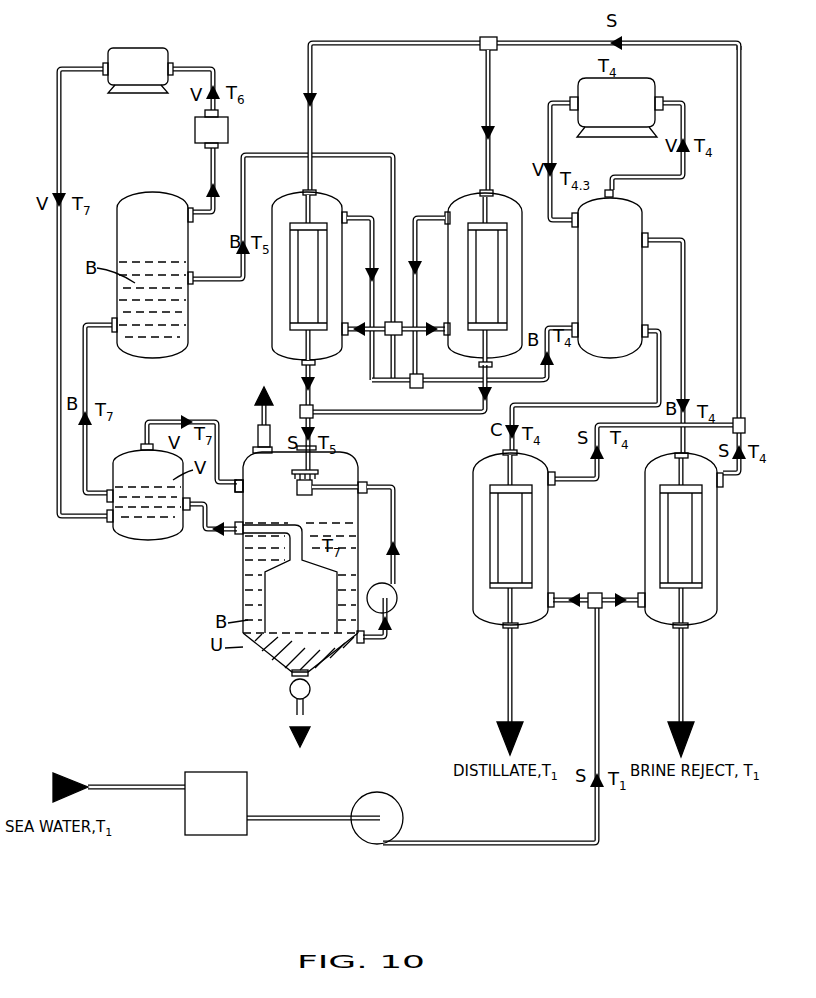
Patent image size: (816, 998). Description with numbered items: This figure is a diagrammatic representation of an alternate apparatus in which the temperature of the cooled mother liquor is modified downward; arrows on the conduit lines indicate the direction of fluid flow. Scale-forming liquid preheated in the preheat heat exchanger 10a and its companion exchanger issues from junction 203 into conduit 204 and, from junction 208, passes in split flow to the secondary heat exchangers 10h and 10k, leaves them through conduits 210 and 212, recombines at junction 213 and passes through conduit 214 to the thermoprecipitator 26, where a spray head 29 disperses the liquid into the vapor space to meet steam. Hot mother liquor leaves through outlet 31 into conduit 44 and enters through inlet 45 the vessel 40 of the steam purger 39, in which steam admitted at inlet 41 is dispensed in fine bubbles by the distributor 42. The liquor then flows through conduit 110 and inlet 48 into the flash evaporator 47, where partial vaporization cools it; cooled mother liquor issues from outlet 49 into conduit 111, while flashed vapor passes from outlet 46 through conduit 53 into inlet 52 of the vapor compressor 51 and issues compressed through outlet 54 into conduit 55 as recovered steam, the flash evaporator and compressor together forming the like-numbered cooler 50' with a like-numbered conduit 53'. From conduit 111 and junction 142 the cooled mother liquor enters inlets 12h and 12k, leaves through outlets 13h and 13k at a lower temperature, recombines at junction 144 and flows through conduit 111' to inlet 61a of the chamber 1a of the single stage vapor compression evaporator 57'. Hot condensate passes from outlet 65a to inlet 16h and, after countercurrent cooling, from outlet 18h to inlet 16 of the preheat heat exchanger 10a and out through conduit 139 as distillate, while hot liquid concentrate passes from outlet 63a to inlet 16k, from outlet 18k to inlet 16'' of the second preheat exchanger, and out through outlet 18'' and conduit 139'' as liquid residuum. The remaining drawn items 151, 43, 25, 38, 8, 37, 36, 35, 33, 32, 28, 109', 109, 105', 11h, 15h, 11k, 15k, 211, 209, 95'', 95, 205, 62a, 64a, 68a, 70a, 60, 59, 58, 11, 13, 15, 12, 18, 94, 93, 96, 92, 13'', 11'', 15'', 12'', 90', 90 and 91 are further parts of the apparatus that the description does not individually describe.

The vapor compressor 51 is at (123, 48).
The outlet 54 is at (102, 64).
The inlet 52 is at (173, 62).
The compressor assembly 50' is at (218, 40).
The compressor discharge line 53' is at (215, 84).
The trap 151 is at (229, 124).
The conduit 53 is at (196, 180).
The outlet 46 is at (193, 222).
The conduit 55 is at (62, 123).
The flash evaporator 47 is at (143, 191).
The inlet 48 is at (113, 318).
The outlet 49 is at (193, 284).
The conduit 111 is at (293, 267).
The conduit 110 is at (88, 376).
The vapor line 43 is at (210, 422).
The vapor outlet nozzle 25 is at (141, 445).
The steam purger 39 is at (131, 457).
The vessel 40 is at (136, 495).
The distributor 42 is at (148, 520).
The inlet nozzle 38 is at (106, 497).
The inlet 41 is at (109, 524).
The inlet 45 is at (189, 511).
The conduit 44 is at (210, 533).
The outlet 31 is at (237, 488).
The evaporator vessel 8 is at (173, 494).
The draft tube 37 is at (290, 520).
The vessel wall 36 is at (243, 597).
The recirculation outlet nozzle 35 is at (362, 645).
The drain valve 33 is at (290, 690).
The vapor outlet nozzle 32 is at (258, 440).
The thermoprecipitator 26 is at (273, 443).
The junction 213 is at (302, 386).
The conduit 210 is at (310, 396).
The conduit 214 is at (314, 424).
The conduit 212 is at (395, 417).
The inlet flange 28 is at (316, 449).
The spray head 29 is at (318, 474).
The heater 109' is at (327, 499).
The heat exchanger line 109 is at (314, 673).
The recirculation pump 105' is at (407, 603).
The inlet 16h is at (304, 190).
The secondary heat exchanger 10h is at (323, 194).
The outlet 13h is at (347, 213).
The shell 11h is at (272, 307).
The tube bundle 15h is at (290, 325).
The outlet 18h is at (302, 363).
The inlet 12h is at (348, 336).
The junction 142 is at (393, 336).
The junction 144 is at (418, 389).
The outlet 13k is at (445, 215).
The inlet 16k is at (483, 190).
The secondary heat exchanger 10k is at (511, 198).
The shell 11k is at (522, 275).
The tube bundle 15k is at (507, 297).
The inlet 12k is at (446, 336).
The outlet 18k is at (492, 365).
The steam line 211 is at (486, 152).
The steam line 209 is at (313, 118).
The junction 208 is at (490, 37).
The conduit 204 is at (736, 305).
The junction 203 is at (734, 417).
The steam inlet line 95'' is at (719, 450).
The steam inlet line 95 is at (582, 467).
The line 205 is at (590, 405).
The conduit 111' is at (480, 365).
The inlet 61a is at (572, 328).
The outlet 65a is at (648, 325).
The chamber 1a is at (640, 207).
The inlet nozzle 62a is at (573, 227).
The outlet 63a is at (648, 235).
The top nozzle 64a is at (613, 193).
The compressor discharge line 68a is at (686, 176).
The compressor suction line 70a is at (547, 127).
The compressor inlet 60 is at (572, 96).
The compressor outlet 59 is at (665, 102).
The compressor 58 is at (630, 78).
The single stage vapor compression evaporator 57' is at (679, 79).
The inlet 16 is at (492, 441).
The preheat heat exchanger 10a is at (537, 458).
The shell 11 is at (456, 473).
The side nozzle 13 is at (562, 491).
The tube bundle 15 is at (535, 536).
The side nozzle 12 is at (560, 617).
The bottom nozzle 18 is at (495, 642).
The conduit 139 is at (486, 691).
The valve 94 is at (580, 593).
The junction 93 is at (597, 593).
The valve 96 is at (620, 594).
The sea water feed line 92 is at (594, 677).
The inlet 16'' is at (670, 442).
The side nozzle 13'' is at (742, 493).
The shell 11'' is at (639, 548).
The tube bundle 15'' is at (709, 536).
The side nozzle 12'' is at (638, 618).
The outlet 18'' is at (706, 638).
The conduit 139'' is at (657, 692).
The sea water intake line 90' is at (119, 774).
The sea water line 90 is at (313, 800).
The feed pump 91 is at (403, 818).